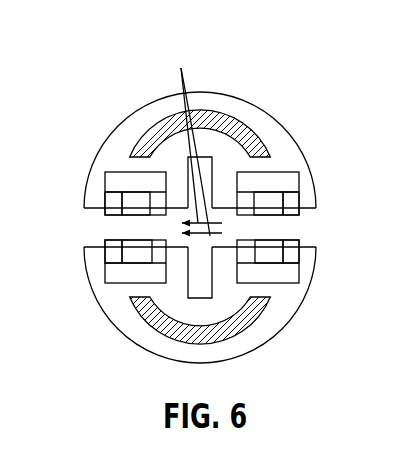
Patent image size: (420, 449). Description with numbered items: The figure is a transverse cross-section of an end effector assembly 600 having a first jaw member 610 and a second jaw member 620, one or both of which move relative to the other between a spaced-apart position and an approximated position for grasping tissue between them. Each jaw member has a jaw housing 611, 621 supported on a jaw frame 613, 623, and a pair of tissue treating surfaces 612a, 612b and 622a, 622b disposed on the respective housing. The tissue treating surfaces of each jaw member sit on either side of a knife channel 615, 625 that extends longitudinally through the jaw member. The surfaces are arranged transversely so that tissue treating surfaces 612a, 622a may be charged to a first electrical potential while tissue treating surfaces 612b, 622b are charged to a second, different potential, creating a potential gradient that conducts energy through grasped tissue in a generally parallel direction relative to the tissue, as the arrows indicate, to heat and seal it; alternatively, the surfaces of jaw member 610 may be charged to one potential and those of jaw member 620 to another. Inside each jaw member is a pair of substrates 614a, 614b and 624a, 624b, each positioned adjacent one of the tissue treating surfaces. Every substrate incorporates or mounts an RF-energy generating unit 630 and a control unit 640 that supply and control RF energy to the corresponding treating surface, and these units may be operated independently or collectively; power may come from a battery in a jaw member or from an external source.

The end effector assembly 600 is at (282, 47).
The first jaw member 610 is at (112, 115).
The jaw housing 611 is at (163, 101).
The tissue treating surface 612a is at (287, 216).
The tissue treating surface 612b is at (122, 216).
The jaw frame 613 is at (205, 165).
The substrate 614a is at (272, 182).
The substrate 614b is at (162, 198).
The knife channel 615 is at (247, 195).
The second jaw member 620 is at (122, 343).
The jaw housing 621 is at (172, 348).
The tissue treating surface 622a is at (287, 239).
The tissue treating surface 622b is at (122, 240).
The jaw frame 623 is at (220, 336).
The substrate 624a is at (295, 255).
The substrate 624b is at (113, 253).
The knife channel 625 is at (203, 290).
The RF-energy generating unit 630 is at (133, 197).
The control unit 640 is at (112, 197).